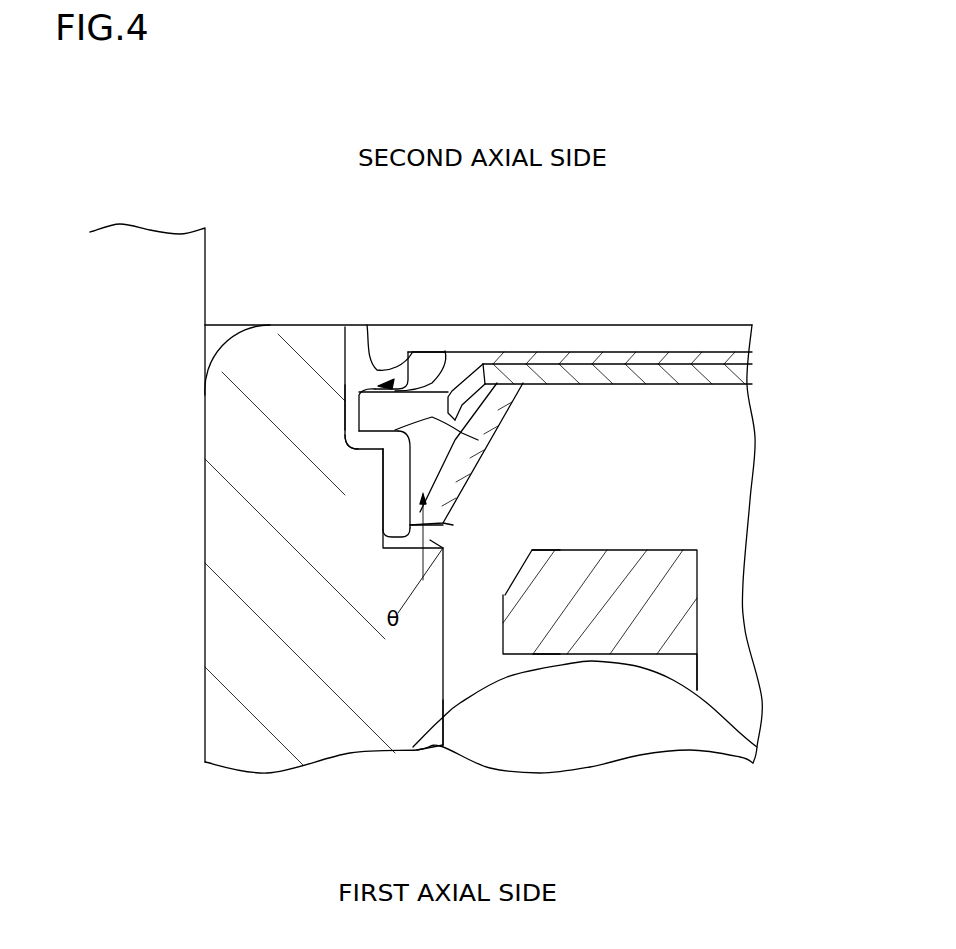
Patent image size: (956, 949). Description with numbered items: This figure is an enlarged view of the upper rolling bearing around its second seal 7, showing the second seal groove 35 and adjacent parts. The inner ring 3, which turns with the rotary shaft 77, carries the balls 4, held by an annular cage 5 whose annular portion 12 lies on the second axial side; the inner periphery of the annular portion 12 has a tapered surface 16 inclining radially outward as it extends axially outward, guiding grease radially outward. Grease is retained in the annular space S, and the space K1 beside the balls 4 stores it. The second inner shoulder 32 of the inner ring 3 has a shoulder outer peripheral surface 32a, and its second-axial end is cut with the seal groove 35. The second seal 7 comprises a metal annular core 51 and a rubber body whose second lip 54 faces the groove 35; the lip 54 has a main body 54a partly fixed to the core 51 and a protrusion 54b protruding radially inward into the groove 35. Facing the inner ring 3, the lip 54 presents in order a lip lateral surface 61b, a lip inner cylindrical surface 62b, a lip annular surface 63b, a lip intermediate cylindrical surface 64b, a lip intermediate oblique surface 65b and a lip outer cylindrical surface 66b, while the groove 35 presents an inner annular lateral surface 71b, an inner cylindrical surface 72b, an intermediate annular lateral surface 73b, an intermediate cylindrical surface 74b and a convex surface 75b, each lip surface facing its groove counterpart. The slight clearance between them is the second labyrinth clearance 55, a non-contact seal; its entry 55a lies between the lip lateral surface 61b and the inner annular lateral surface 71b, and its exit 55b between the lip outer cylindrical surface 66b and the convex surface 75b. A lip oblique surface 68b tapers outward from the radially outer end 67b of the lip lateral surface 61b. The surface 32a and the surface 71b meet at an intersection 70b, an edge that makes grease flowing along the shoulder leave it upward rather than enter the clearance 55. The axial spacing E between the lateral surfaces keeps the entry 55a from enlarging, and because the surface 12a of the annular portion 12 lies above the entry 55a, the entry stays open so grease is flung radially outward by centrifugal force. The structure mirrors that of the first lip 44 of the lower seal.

The rotary shaft 77 is at (150, 250).
The inner ring 3 is at (220, 327).
The second seal 7 is at (688, 350).
The annular core 51 is at (712, 380).
The annular space S is at (643, 410).
The lip intermediate oblique surface 65b is at (345, 325).
The convex surface 75b is at (352, 372).
The lip outer cylindrical surface 66b is at (388, 380).
The exit 55b is at (444, 349).
The second seal groove 35 is at (395, 392).
The intermediate cylindrical surface 74b is at (347, 400).
The lip intermediate cylindrical surface 64b is at (347, 404).
The protrusion 54b is at (345, 428).
The lip annular surface 63b is at (347, 441).
The second lip 54 is at (383, 500).
The lip inner cylindrical surface 62b is at (410, 480).
The inner cylindrical surface 72b is at (383, 508).
The lip lateral surface 61b is at (383, 530).
The inner annular lateral surface 71b is at (385, 548).
The intersection 70b is at (446, 598).
The radially outer end 67b is at (460, 528).
The second labyrinth clearance 55 is at (440, 537).
The entry 55a is at (445, 548).
The lip oblique surface 68b is at (517, 407).
The intermediate annular lateral surface 73b is at (480, 433).
The main body 54a is at (480, 450).
The first lip 44 is at (473, 467).
The annular portion 12 is at (680, 598).
The surface 12a is at (658, 547).
The space K1 is at (698, 532).
The annular cage 5 is at (700, 628).
The balls 4 is at (706, 716).
The tapered surface 16 is at (507, 590).
The second inner shoulder 32 is at (422, 690).
The shoulder outer peripheral surface 32a is at (452, 683).
The axial spacing E is at (425, 522).